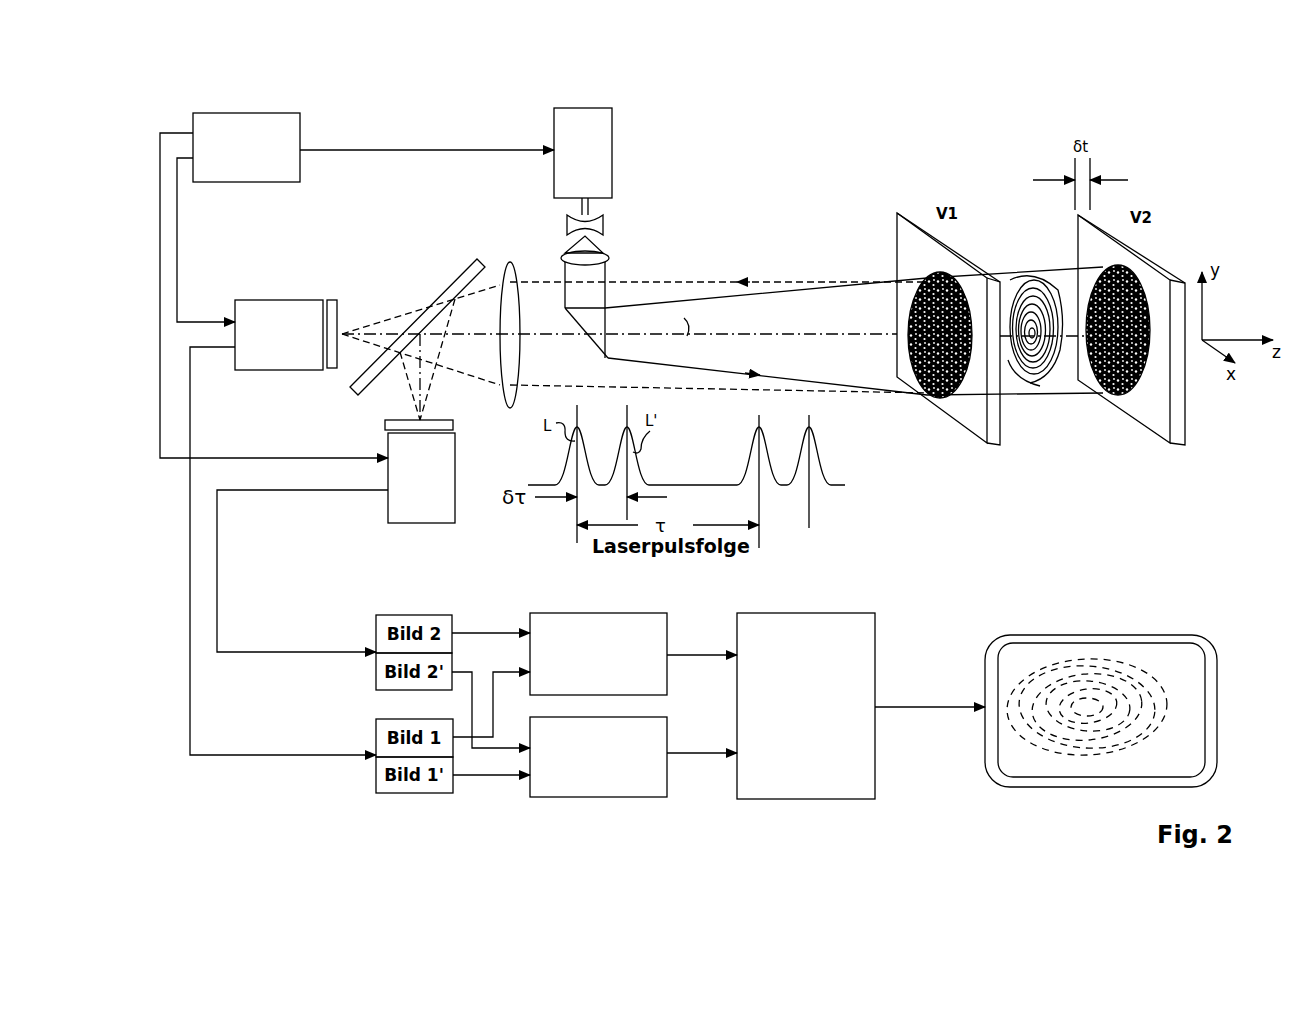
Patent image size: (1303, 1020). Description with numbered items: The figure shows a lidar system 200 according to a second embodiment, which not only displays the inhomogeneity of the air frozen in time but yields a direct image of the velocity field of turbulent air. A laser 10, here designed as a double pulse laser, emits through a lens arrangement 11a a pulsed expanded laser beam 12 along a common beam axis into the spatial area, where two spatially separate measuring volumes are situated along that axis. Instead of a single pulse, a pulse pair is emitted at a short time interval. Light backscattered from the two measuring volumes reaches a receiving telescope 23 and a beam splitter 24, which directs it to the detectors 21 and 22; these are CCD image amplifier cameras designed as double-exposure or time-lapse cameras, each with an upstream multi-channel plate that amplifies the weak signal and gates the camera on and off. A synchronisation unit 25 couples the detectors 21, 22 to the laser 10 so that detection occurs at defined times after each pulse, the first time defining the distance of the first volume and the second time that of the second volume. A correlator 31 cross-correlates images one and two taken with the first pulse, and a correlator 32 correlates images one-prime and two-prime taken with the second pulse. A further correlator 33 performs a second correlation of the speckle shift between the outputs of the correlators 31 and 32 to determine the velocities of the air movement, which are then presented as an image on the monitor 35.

The lidar system 200 is at (417, 64).
The synchronisation unit 25 is at (273, 125).
The laser 10 is at (585, 131).
The lens arrangement 11a is at (605, 243).
The pulsed expanded laser beam 12 is at (836, 329).
The receiving telescope 23 is at (512, 276).
The beam splitter 24 is at (447, 290).
The detector 21 is at (268, 313).
The detector 22 is at (443, 446).
The correlator 31 is at (548, 658).
The correlator 32 is at (621, 770).
The correlator 33 is at (816, 632).
The monitor 35 is at (1085, 668).